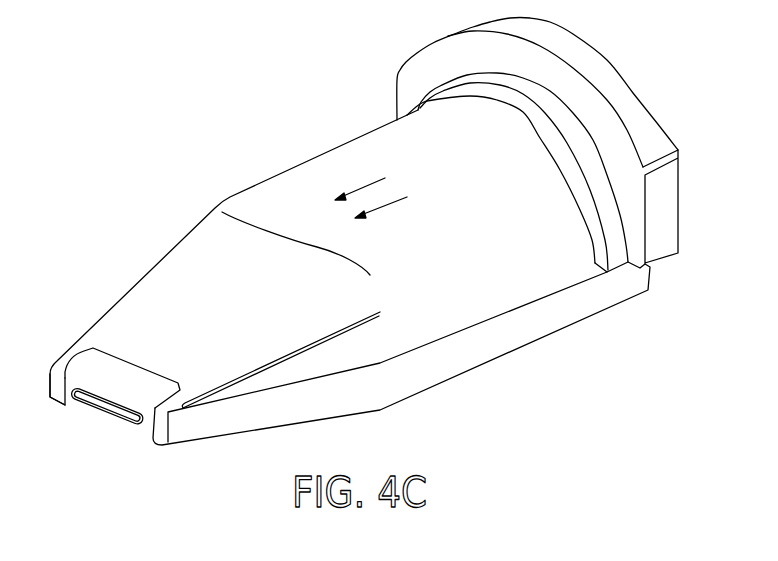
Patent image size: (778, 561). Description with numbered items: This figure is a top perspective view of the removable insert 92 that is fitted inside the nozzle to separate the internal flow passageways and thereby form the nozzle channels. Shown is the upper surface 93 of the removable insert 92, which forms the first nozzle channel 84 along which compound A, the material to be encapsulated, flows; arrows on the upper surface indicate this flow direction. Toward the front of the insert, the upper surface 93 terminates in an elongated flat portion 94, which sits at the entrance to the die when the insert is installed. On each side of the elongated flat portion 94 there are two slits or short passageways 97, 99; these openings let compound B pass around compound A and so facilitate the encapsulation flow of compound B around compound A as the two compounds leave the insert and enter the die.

The removable insert 92 is at (218, 92).
The upper surface 93 is at (267, 197).
The first nozzle channel 84 is at (392, 207).
The elongated flat portion 94 is at (125, 380).
The slit 97 is at (67, 396).
The slit 99 is at (150, 418).